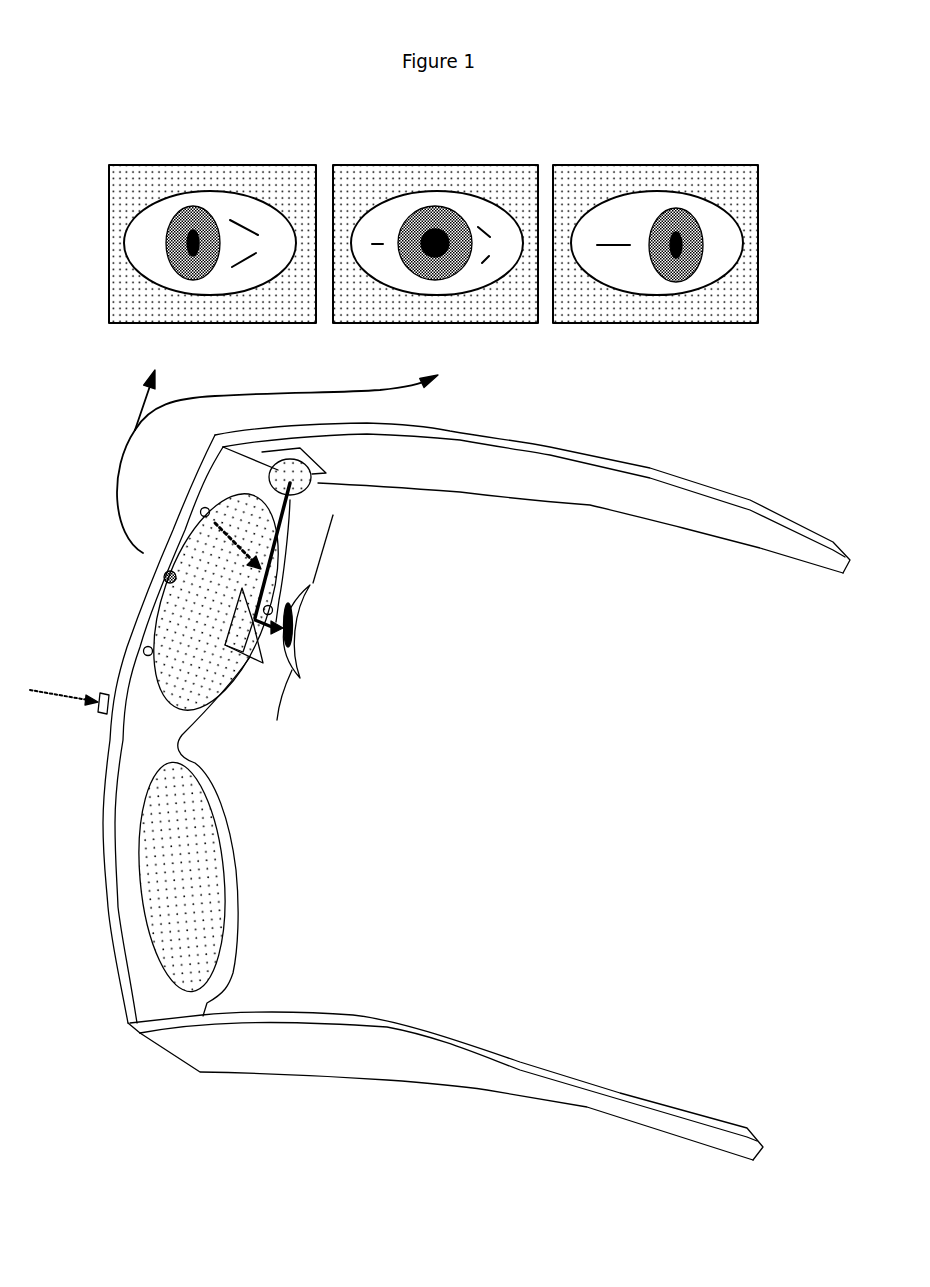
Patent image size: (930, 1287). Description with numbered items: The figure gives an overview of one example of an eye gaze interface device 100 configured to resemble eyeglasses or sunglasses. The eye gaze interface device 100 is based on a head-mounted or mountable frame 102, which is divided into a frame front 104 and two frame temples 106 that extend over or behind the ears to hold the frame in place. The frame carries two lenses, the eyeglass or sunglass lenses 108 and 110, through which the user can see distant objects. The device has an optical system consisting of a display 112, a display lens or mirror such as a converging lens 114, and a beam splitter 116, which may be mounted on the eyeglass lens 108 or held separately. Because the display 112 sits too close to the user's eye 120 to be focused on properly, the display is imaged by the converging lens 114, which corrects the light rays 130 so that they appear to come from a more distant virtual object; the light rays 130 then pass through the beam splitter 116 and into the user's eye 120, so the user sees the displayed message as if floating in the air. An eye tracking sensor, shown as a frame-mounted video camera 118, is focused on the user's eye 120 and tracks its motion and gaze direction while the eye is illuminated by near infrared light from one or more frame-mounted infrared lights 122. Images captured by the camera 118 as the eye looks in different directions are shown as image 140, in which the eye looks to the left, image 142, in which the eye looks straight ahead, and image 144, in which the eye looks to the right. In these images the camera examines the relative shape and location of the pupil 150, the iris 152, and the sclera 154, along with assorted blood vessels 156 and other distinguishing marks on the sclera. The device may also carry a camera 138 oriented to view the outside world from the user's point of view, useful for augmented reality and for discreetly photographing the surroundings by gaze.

The eye gaze interface device 100 is at (199, 1152).
The head-mounted frame 102 is at (95, 1026).
The frame front 104 is at (101, 804).
The frame temple 106 is at (545, 438).
The eyeglass lens 108 is at (196, 695).
The eyeglass lens 110 is at (223, 848).
The display 112 is at (317, 485).
The converging lens 114 is at (313, 490).
The beam splitter 116 is at (250, 663).
The eye tracking sensor 118 is at (164, 586).
The user's eye 120 is at (306, 626).
The eye illumination light 122 is at (206, 503).
The light rays 130 is at (279, 527).
The outward-viewing camera 138 is at (99, 724).
The eye image 140 is at (178, 153).
The eye image 142 is at (400, 153).
The eye image 144 is at (655, 246).
The pupil 150 is at (683, 223).
The iris 152 is at (703, 220).
The sclera 154 is at (630, 275).
The blood vessels 156 is at (607, 252).